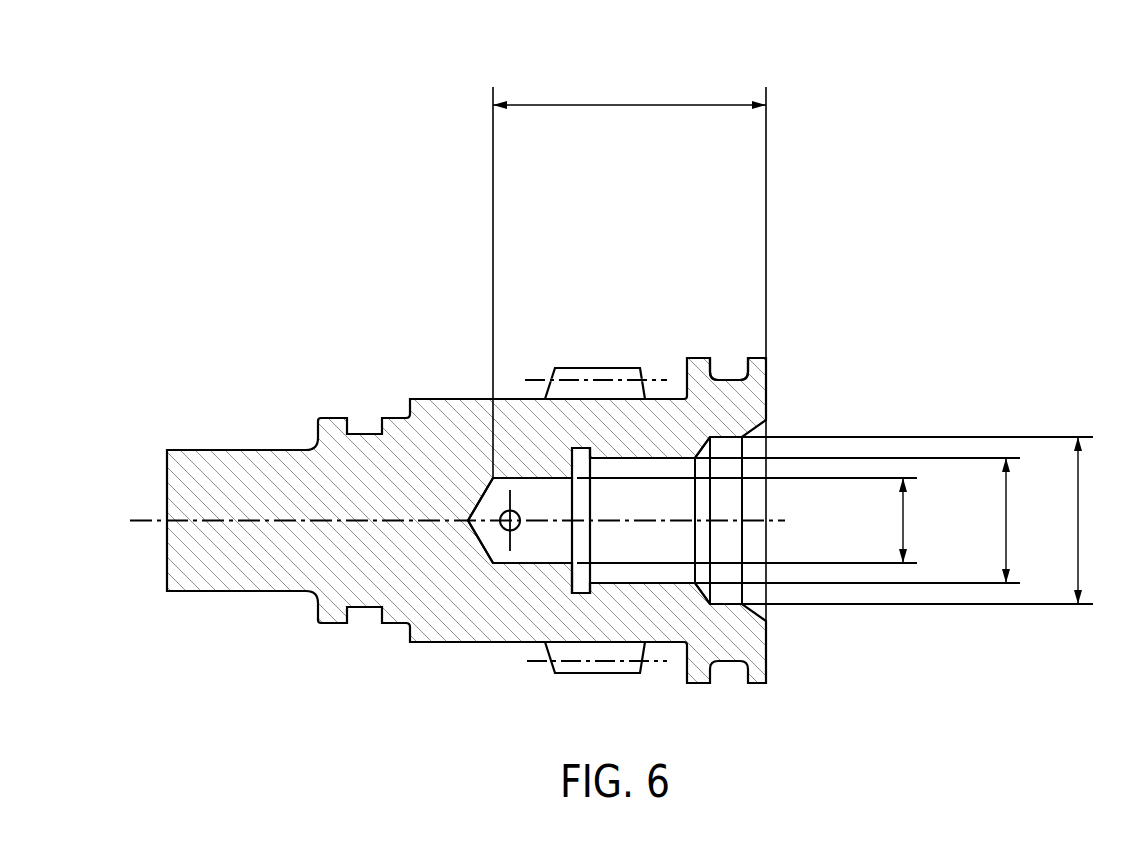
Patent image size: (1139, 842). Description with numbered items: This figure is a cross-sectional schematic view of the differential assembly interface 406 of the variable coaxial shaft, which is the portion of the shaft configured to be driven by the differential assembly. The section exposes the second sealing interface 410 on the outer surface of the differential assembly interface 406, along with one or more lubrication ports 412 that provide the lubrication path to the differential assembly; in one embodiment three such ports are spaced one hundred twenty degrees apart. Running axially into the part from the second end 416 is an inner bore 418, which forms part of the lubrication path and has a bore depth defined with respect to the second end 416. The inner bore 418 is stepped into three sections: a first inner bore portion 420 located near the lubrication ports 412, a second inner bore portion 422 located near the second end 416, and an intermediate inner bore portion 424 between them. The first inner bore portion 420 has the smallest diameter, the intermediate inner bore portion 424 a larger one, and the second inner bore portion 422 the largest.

The differential assembly interface 406 is at (615, 379).
The second sealing interface 410 is at (725, 377).
The lubrication port 412 is at (507, 530).
The second end 416 is at (758, 647).
The inner bore 418 is at (755, 508).
The first inner bore portion 420 is at (550, 550).
The second inner bore portion 422 is at (725, 598).
The intermediate inner bore portion 424 is at (637, 573).